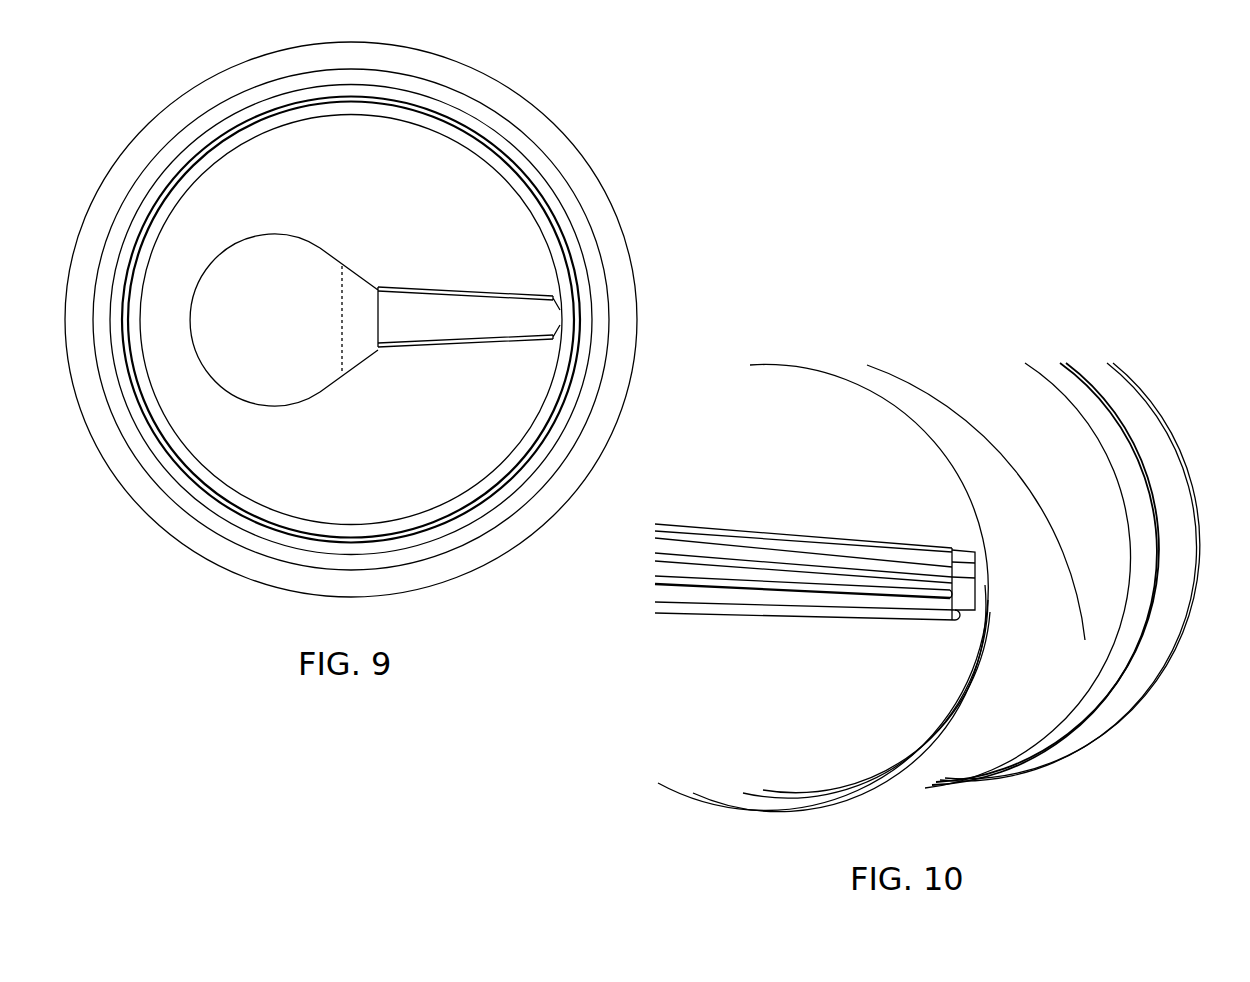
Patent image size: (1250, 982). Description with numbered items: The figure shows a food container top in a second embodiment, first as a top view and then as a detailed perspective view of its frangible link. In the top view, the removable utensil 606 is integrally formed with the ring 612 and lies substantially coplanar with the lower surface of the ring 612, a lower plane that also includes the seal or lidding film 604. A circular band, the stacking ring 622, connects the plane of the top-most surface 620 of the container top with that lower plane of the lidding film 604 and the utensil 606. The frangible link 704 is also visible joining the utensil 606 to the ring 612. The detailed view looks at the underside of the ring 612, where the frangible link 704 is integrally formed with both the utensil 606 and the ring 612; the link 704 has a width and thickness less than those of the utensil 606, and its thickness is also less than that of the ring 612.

In FIG. 9, the lidding film 604 is at (423, 493).
In FIG. 9, the removable utensil 606 is at (300, 259).
In FIG. 10, the removable utensil 606 is at (725, 530).
In FIG. 9, the ring 612 is at (562, 122).
In FIG. 10, the ring 612 is at (1168, 475).
In FIG. 9, the top-most surface 620 is at (610, 237).
In FIG. 9, the stacking ring 622 is at (552, 198).
In FIG. 9, the frangible link 704 is at (558, 324).
In FIG. 10, the frangible link 704 is at (985, 598).